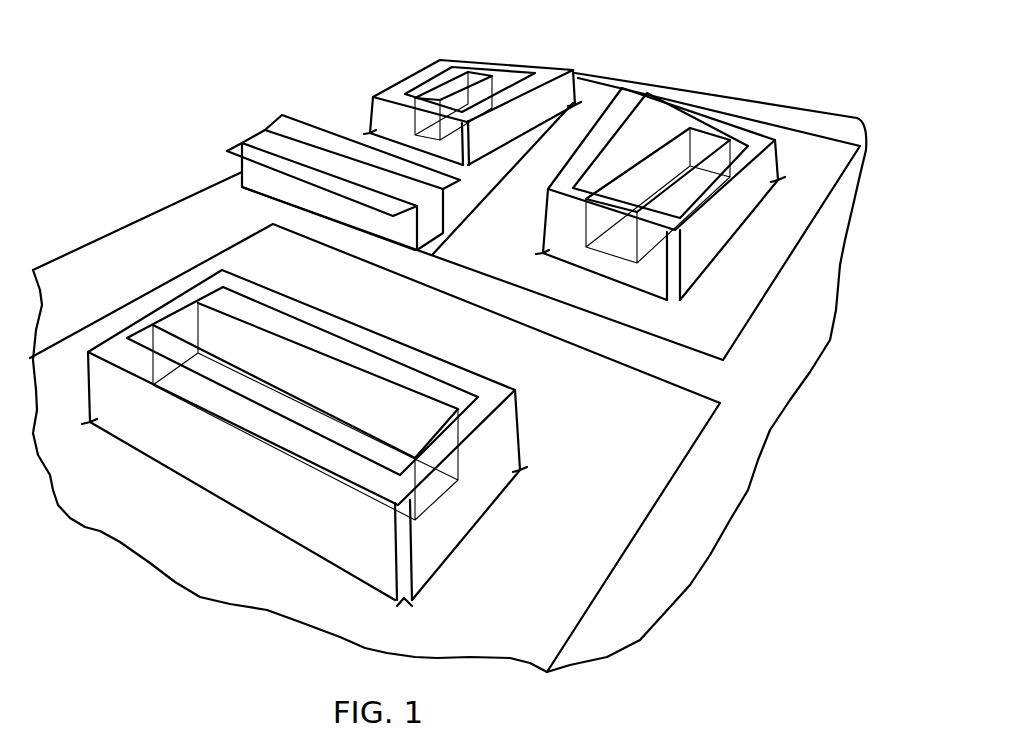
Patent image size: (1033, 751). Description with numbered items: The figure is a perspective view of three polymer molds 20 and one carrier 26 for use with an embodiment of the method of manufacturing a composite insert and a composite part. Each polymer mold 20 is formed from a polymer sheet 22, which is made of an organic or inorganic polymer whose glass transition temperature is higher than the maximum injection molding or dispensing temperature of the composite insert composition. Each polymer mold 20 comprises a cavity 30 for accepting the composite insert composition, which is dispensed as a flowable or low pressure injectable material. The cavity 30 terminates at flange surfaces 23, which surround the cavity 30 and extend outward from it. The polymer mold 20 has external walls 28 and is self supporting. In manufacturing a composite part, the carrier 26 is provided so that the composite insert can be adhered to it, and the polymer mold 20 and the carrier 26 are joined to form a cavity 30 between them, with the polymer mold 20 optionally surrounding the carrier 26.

The polymer mold 20 is at (456, 310).
The polymer sheet 22 is at (497, 170).
The flange surfaces 23 is at (426, 76).
The carrier 26 is at (238, 147).
The external walls 28 is at (388, 118).
The cavity 30 is at (481, 82).